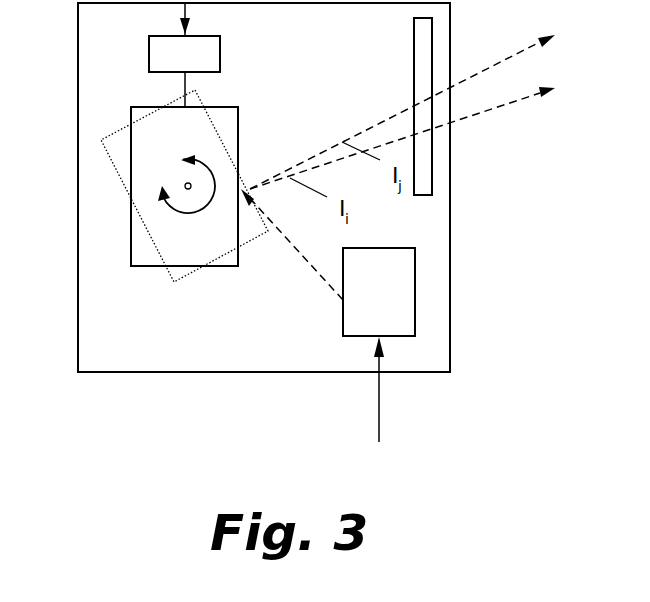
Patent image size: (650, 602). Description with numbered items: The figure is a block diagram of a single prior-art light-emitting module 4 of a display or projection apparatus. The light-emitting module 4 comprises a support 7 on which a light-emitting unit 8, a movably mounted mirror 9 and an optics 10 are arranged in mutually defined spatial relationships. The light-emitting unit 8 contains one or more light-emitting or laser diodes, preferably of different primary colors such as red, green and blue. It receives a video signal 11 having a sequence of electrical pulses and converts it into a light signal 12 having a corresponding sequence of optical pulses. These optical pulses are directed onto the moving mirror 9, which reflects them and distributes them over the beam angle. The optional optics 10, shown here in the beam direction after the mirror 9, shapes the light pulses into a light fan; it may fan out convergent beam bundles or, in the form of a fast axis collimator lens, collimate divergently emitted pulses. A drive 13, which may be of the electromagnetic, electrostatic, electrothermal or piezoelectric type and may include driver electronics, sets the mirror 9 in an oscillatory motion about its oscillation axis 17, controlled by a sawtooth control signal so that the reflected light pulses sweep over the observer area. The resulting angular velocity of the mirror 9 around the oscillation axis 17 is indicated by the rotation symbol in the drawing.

The light-emitting module 4 is at (450, 230).
The support 7 is at (78, 302).
The light-emitting unit 8 is at (415, 317).
The mirror 9 is at (238, 142).
The optics 10 is at (432, 160).
The video signal 11 is at (379, 405).
The light signal 12 is at (308, 265).
The drive 13 is at (220, 52).
The oscillation axis 17 is at (185, 183).